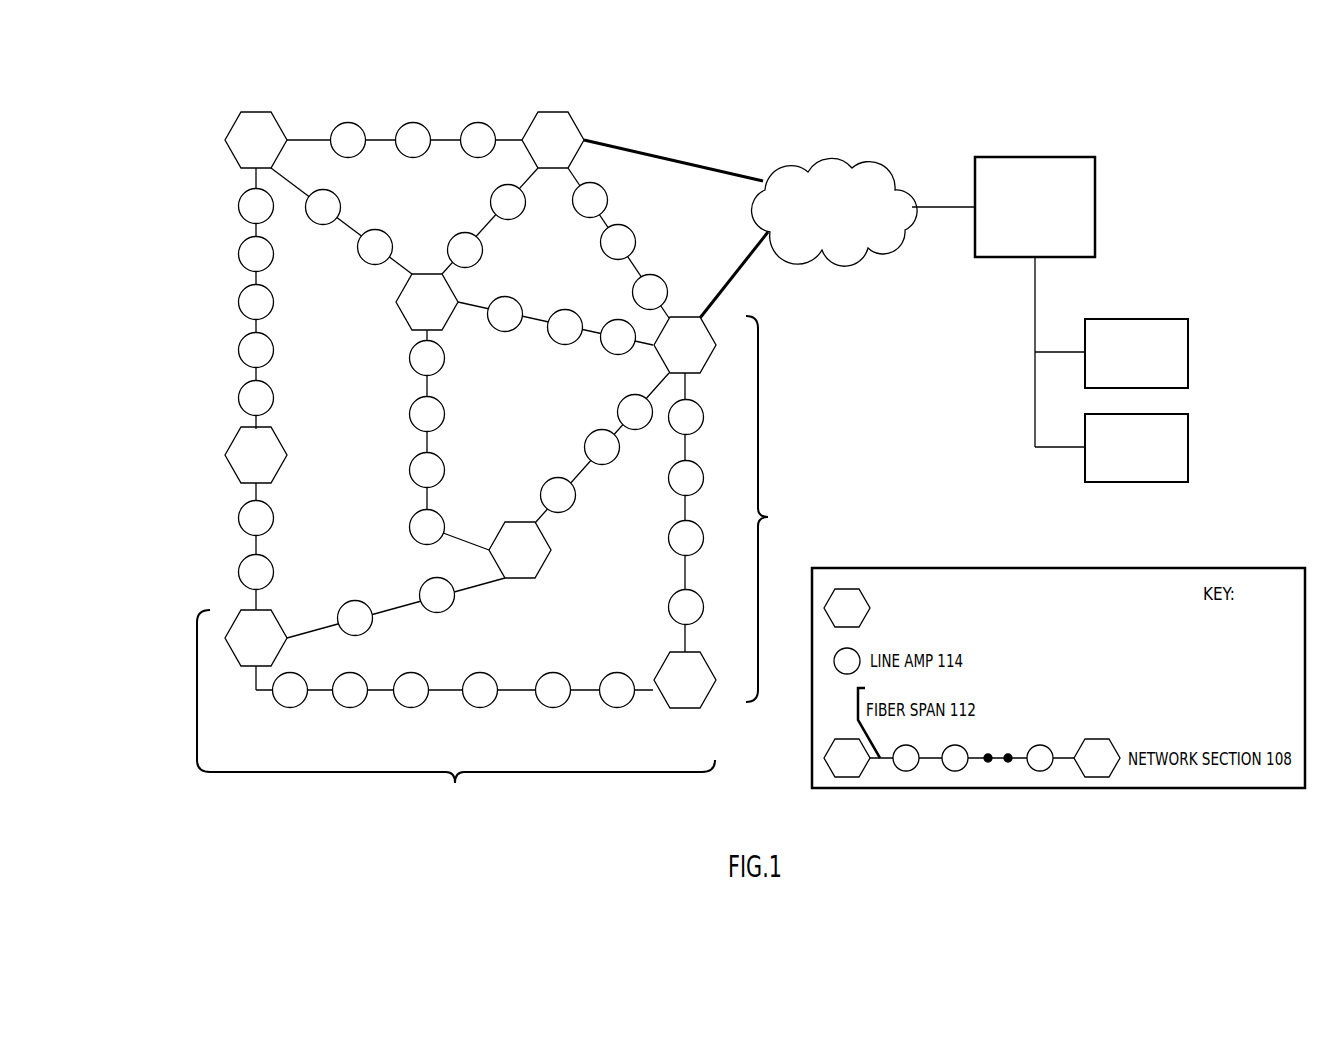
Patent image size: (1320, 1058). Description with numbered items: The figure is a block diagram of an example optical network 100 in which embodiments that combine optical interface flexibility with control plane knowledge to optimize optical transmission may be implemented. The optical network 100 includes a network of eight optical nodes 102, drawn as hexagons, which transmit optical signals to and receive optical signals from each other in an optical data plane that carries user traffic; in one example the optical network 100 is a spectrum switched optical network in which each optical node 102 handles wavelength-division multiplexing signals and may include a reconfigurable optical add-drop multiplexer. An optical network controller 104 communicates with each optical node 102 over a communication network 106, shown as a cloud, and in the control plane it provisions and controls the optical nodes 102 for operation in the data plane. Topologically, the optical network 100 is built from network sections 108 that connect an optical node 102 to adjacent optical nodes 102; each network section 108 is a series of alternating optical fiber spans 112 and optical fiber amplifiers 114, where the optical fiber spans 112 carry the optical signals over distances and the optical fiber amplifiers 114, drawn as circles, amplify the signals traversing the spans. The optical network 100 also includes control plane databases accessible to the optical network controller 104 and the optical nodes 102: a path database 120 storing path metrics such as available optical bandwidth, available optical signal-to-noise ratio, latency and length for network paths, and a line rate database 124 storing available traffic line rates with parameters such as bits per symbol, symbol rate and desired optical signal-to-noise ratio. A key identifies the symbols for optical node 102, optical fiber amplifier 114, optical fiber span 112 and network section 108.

The optical network 100 is at (710, 92).
The optical nodes 102 is at (917, 608).
The optical network controller 104 is at (1095, 186).
The communication network 106 is at (853, 162).
The network section 108 is at (571, 578).
The optical fiber spans 112 is at (240, 327).
The optical fiber amplifiers 114 is at (240, 205).
The path database 120 is at (1188, 347).
The line rate database 124 is at (1188, 440).